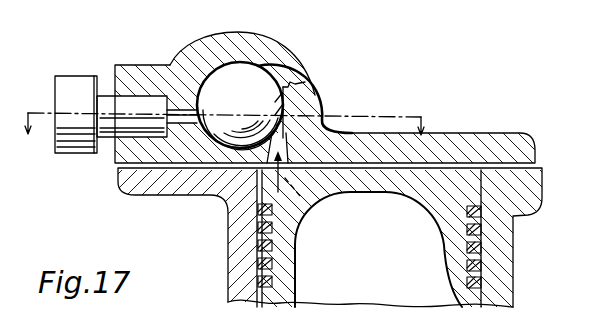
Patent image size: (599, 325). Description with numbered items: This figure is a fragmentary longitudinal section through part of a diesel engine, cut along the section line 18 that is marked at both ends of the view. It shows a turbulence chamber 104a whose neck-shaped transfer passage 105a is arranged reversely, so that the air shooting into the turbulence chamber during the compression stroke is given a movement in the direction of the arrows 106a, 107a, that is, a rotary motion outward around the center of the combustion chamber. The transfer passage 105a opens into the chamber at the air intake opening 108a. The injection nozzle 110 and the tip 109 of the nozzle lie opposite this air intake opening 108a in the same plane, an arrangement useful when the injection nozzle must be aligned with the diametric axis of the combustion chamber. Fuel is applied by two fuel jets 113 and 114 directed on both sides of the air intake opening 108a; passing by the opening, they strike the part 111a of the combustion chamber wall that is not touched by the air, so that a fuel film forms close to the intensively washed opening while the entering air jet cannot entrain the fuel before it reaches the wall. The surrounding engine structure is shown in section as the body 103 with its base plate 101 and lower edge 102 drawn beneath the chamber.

The section line 18- 18 is at (221, 112).
The base plate 101 is at (240, 248).
The bottom of base plate 102 is at (250, 303).
The body 103 is at (521, 125).
The turbulence chamber 104a is at (272, 135).
The transfer passage 105a is at (315, 216).
The arrow 106a is at (250, 198).
The arrow 107a is at (223, 82).
The air intake opening 108a is at (312, 112).
The tip of the nozzle 109 is at (203, 53).
The injection nozzle 110 is at (123, 107).
The wall of the combustion chamber 111a is at (305, 82).
The fuel jet 113 is at (311, 84).
The fuel jet 114 is at (353, 40).